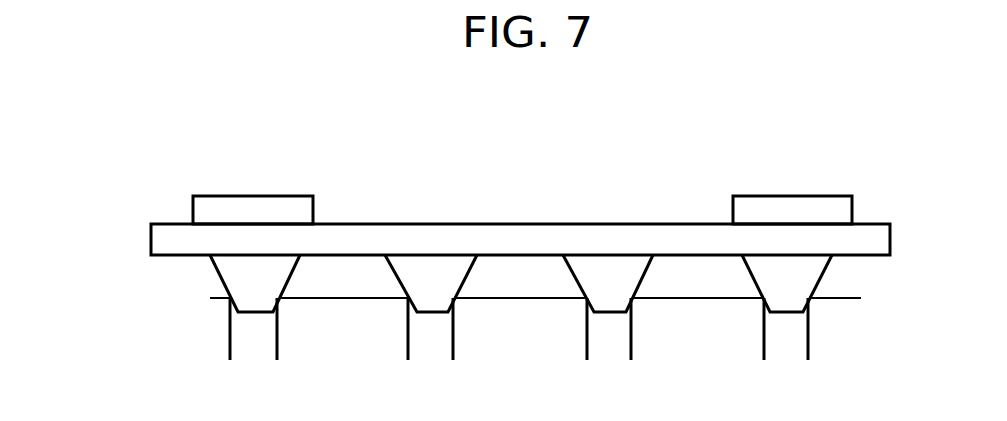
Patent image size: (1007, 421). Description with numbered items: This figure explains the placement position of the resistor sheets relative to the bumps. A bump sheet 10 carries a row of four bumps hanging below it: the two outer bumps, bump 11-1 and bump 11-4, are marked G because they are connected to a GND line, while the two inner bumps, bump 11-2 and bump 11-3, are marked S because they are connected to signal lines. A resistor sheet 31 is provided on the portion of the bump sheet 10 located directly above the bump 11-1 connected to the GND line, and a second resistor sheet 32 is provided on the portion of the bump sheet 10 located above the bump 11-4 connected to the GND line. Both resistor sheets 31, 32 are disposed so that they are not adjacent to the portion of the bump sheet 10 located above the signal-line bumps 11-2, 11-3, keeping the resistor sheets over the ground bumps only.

The bump sheet 10 is at (430, 224).
The resistor sheet 31 is at (222, 195).
The resistor sheet 32 is at (772, 195).
The bump 11-1 is at (218, 273).
The bump 11-2 is at (397, 282).
The bump 11-3 is at (575, 277).
The bump 11-4 is at (752, 275).